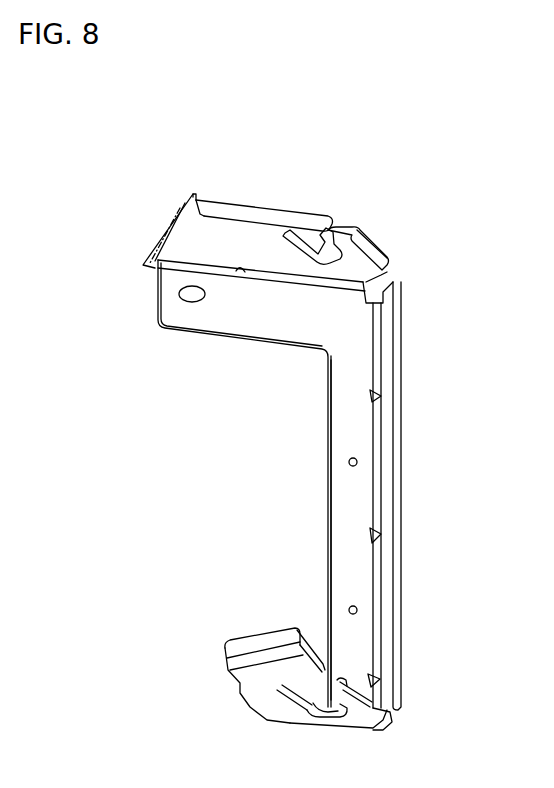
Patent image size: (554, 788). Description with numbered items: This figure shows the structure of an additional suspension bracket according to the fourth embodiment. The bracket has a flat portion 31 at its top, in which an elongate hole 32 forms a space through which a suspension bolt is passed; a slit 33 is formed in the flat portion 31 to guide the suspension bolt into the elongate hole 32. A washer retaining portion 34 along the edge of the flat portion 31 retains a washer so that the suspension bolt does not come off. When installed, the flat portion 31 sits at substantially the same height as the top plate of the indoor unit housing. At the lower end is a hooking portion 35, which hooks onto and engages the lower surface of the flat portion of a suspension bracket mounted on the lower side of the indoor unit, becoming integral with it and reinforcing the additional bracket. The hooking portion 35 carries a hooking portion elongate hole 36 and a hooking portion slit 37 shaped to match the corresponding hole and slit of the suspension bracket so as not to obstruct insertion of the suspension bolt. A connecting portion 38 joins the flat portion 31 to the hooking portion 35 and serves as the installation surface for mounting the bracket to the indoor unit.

The flat portion 31 is at (387, 274).
The elongate hole 32 is at (305, 222).
The slit 33 is at (334, 228).
The washer retaining portion 34 is at (212, 204).
The hooking portion 35 is at (240, 702).
The hooking portion elongate hole 36 is at (317, 708).
The hooking portion slit 37 is at (322, 645).
The connecting portion 38 is at (338, 450).